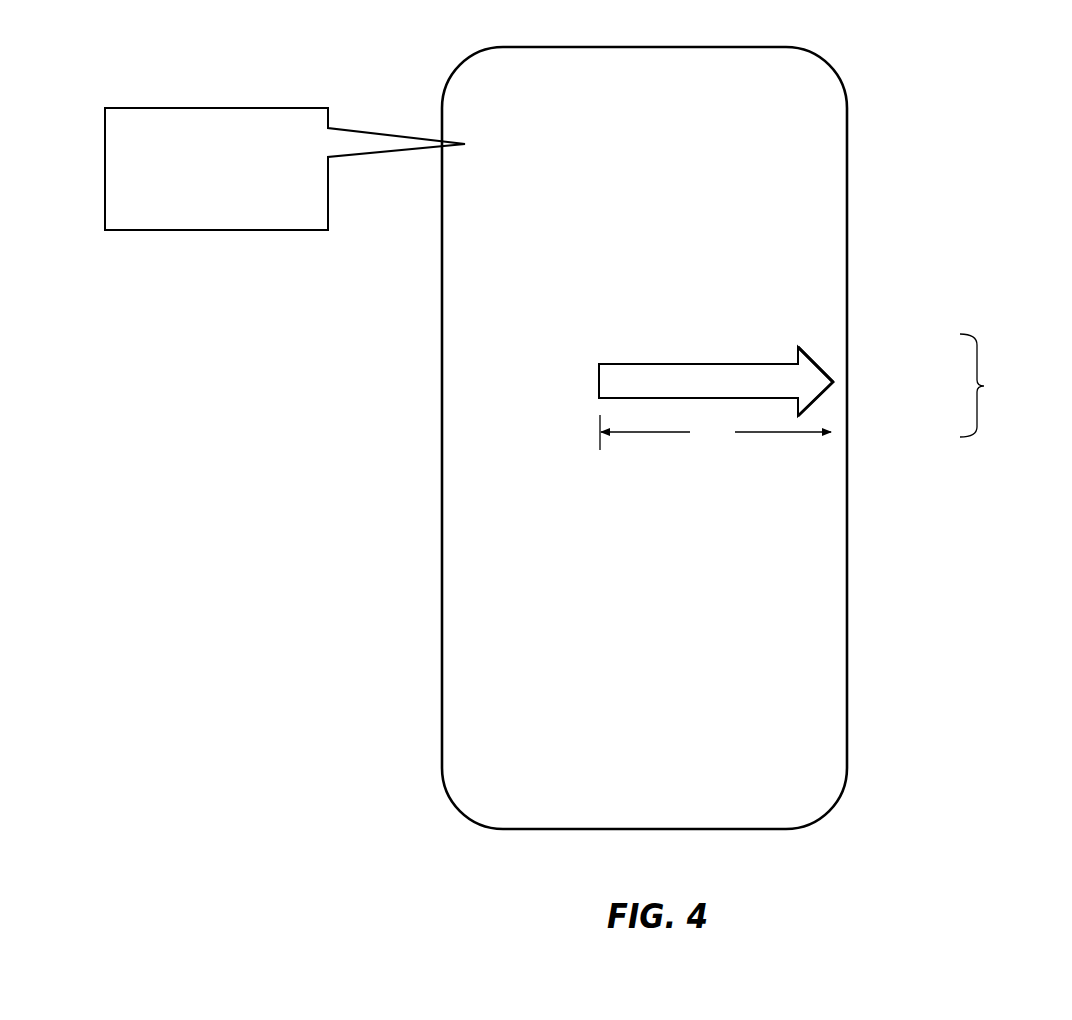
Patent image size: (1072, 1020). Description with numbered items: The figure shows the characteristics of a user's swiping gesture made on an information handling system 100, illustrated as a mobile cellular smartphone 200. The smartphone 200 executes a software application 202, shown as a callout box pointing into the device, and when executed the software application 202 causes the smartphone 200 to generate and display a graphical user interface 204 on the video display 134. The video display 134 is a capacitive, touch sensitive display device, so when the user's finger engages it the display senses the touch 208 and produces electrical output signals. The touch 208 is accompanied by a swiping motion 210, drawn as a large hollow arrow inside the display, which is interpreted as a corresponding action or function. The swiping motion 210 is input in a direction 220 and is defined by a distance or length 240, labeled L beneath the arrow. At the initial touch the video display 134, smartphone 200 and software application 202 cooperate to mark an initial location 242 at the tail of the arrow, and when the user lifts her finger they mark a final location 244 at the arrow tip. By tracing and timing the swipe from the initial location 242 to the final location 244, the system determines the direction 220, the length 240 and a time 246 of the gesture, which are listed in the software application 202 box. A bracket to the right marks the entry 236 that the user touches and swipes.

The information handling system 100 is at (465, 62).
The mobile cellular smartphone 200 is at (833, 72).
The software application 202 is at (130, 108).
The graphical user interface 204 is at (819, 157).
The touch 208 is at (185, 157).
The direction 220 is at (172, 183).
The time 246 is at (190, 211).
The video display 134 is at (777, 798).
The swiping motion 210 is at (800, 390).
The initial location 242 is at (600, 355).
The final location 244 is at (828, 372).
The length 240 is at (713, 450).
The entry 236 is at (984, 386).